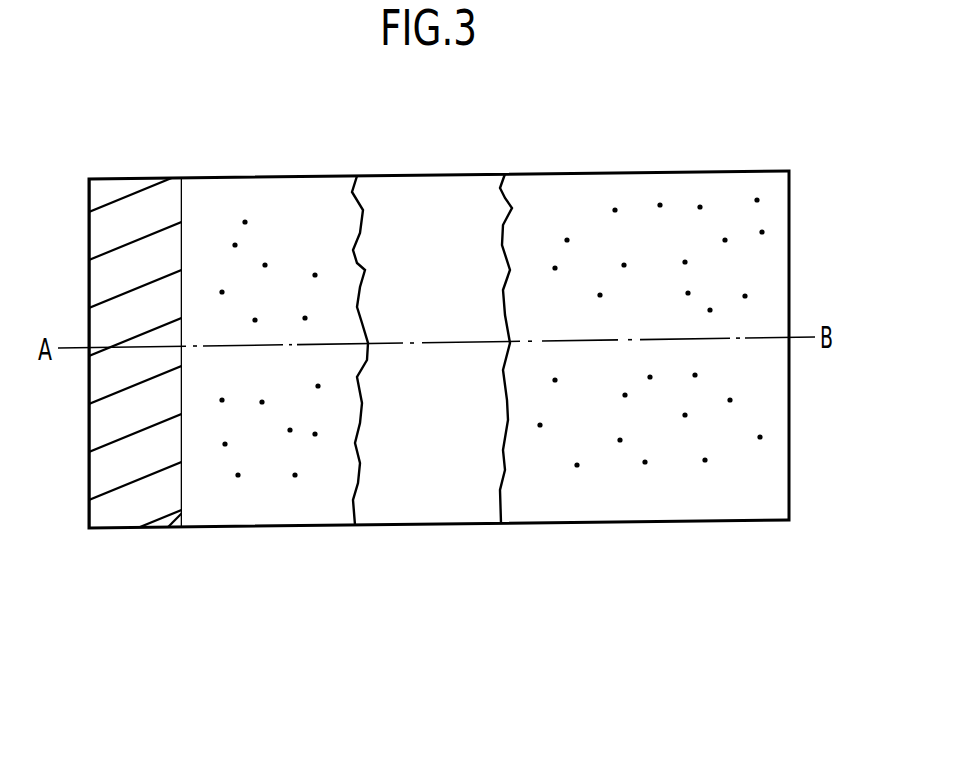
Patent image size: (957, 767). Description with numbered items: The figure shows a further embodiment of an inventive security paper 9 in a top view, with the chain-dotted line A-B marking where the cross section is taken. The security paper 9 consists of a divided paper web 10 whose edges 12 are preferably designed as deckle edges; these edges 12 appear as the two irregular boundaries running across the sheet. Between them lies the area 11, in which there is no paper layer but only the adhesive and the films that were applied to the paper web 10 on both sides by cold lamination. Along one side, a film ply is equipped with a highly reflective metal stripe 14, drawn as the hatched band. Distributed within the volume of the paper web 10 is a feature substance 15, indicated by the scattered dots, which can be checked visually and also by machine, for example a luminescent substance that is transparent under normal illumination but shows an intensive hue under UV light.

The security paper 9 is at (822, 186).
The paper web 10 is at (690, 492).
The area 11 is at (441, 500).
The edges 12 is at (363, 210).
The highly reflective metal stripe 14 is at (135, 505).
The feature substance 15 is at (272, 233).